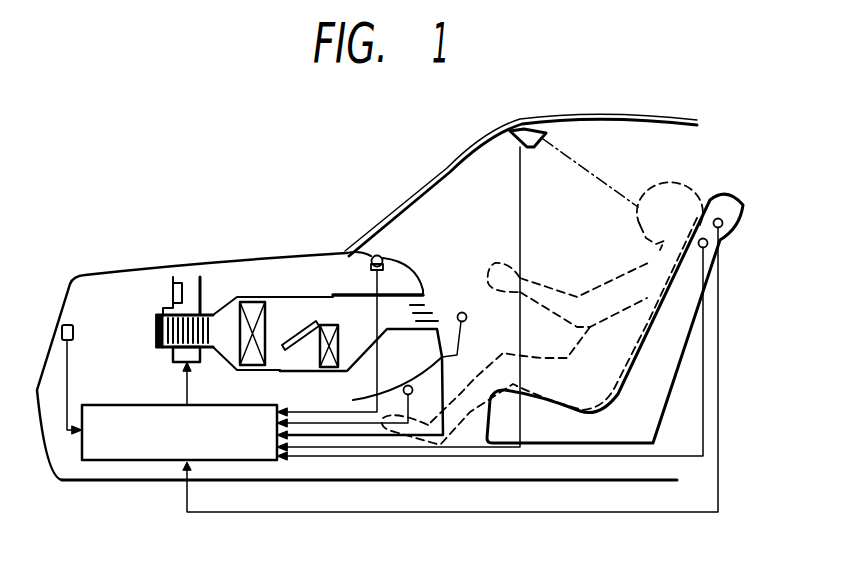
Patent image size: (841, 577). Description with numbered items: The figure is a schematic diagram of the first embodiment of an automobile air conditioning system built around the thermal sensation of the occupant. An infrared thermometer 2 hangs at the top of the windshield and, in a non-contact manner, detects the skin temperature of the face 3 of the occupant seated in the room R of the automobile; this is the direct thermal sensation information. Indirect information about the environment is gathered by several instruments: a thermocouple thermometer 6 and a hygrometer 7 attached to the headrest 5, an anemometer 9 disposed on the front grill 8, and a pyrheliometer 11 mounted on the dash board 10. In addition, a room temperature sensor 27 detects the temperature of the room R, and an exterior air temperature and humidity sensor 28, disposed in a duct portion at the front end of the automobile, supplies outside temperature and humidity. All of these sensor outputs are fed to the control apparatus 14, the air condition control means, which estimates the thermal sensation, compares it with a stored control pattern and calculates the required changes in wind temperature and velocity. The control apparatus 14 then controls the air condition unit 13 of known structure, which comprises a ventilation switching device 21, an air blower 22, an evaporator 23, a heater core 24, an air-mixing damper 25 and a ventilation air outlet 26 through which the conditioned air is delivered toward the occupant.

The infrared thermometer 2 is at (527, 128).
The face 3 is at (661, 190).
The headrest 5 is at (731, 199).
The thermocouple thermometer 6 is at (711, 191).
The hygrometer 7 is at (693, 235).
The front grill 8 is at (424, 291).
The anemometer 9 is at (468, 317).
The dash board 10 is at (404, 255).
The pyrheliometer 11 is at (371, 255).
The air condition unit 13 is at (268, 296).
The control apparatus 14 is at (107, 461).
The ventilation switching device 21 is at (168, 300).
The air blower 22 is at (165, 352).
The evaporator 23 is at (250, 374).
The heater core 24 is at (318, 372).
The air-mixing damper 25 is at (299, 386).
The ventilation air outlet 26 is at (438, 313).
The room temperature sensor 27 is at (408, 385).
The exterior air temperature and humidity sensor 28 is at (75, 332).
The room R is at (473, 173).